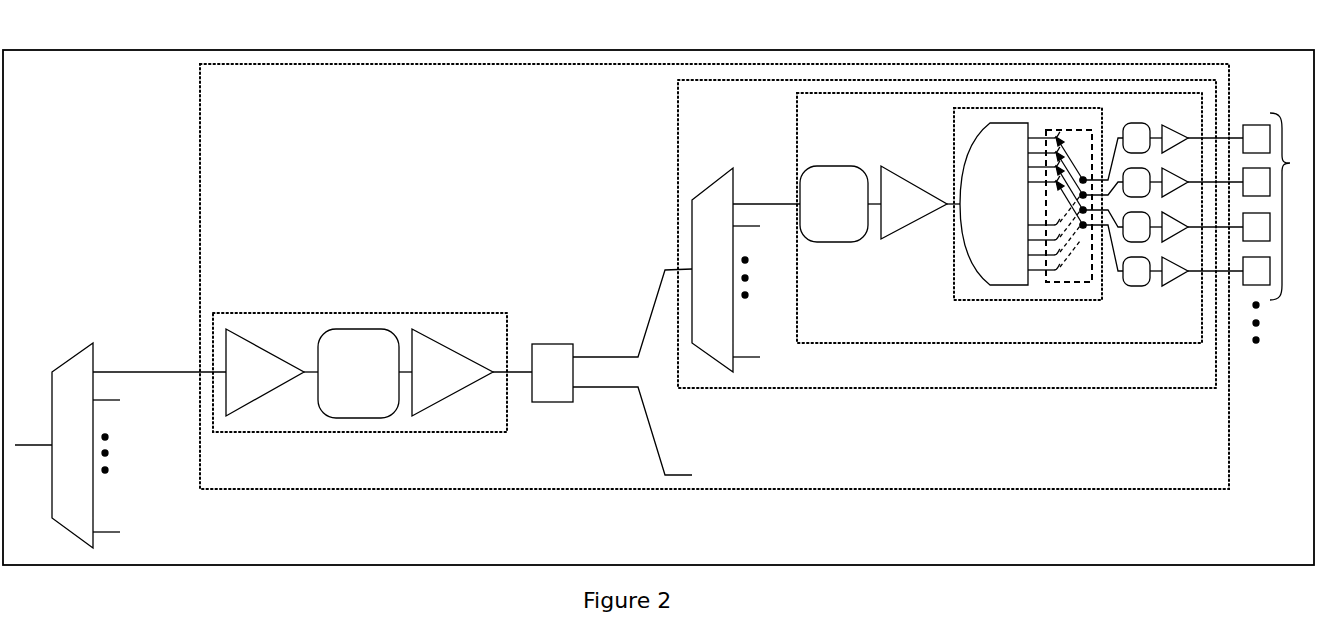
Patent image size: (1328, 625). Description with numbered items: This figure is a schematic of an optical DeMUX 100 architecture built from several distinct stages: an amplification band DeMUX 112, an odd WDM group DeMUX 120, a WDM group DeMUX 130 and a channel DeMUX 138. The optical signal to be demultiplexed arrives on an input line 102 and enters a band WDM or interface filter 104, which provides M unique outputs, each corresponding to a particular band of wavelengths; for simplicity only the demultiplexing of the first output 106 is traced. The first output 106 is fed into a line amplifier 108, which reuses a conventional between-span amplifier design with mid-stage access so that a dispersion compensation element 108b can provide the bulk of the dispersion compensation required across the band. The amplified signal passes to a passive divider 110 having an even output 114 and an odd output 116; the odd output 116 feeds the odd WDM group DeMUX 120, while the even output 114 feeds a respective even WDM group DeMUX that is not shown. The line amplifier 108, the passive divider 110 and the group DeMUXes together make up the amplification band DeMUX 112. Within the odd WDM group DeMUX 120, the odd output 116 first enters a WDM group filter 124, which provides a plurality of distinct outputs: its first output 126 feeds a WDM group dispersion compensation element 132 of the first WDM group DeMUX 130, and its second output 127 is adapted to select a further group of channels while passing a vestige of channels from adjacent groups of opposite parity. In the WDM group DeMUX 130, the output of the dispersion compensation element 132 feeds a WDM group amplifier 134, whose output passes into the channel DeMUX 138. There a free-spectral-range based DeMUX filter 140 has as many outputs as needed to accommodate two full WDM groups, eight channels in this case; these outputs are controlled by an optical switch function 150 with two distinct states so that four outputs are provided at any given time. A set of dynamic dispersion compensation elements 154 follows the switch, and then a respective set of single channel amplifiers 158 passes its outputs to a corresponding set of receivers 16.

The optical DeMUX 100 is at (53, 88).
The line input 102 is at (44, 445).
The band WDM 104 is at (105, 336).
The first output of the band WDM 106 is at (187, 354).
The line amplifier 108 is at (294, 294).
The dispersion compensation element 108b is at (392, 304).
The passive divider 110 is at (585, 319).
The amplification band DeMUX 112 is at (246, 106).
The even output 114 is at (651, 435).
The odd output 116 is at (650, 316).
The odd WDM group DeMUX 120 is at (725, 116).
The WDM group filter 124 is at (744, 163).
The first output of the WDM group filter 126 is at (794, 188).
The second output of the WDM group filter 127 is at (756, 230).
The WDM group DeMUX 130 is at (841, 135).
The WDM group dispersion compensation element 132 is at (826, 242).
The WDM group amplifier 134 is at (894, 239).
The channel DeMUX 138 is at (954, 146).
The free-spectral range (FSR) based DeMUX filter 140 is at (1029, 104).
The optical switch function 150 is at (1089, 111).
The dynamic dispersion compensation elements 154 is at (1117, 265).
The single channel amplifiers 158 is at (1190, 140).
The receivers (Rx) 16 is at (1314, 173).